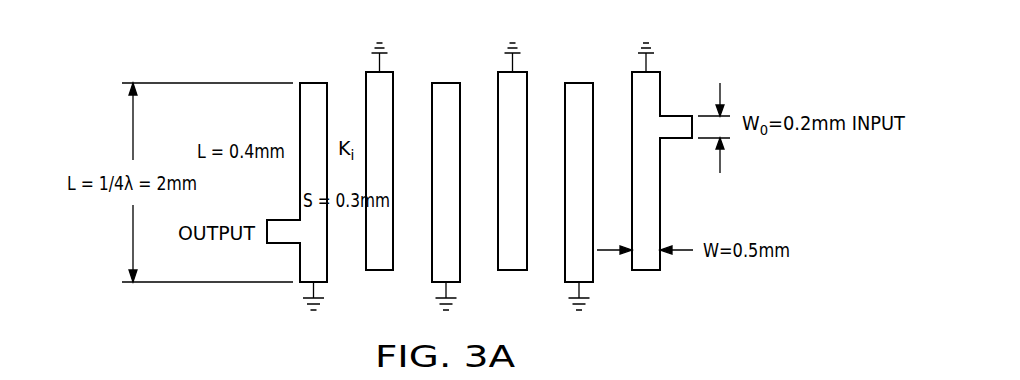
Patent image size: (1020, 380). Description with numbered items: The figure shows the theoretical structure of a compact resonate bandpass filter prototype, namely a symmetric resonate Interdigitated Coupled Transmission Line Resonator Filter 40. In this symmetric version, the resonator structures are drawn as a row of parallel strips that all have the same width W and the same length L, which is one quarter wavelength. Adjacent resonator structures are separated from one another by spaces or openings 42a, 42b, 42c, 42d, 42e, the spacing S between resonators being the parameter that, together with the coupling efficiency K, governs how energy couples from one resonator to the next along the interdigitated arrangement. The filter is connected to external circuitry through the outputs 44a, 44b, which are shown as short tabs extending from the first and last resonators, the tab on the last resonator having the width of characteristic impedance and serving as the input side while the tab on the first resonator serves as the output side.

The symmetric resonate Interdigitated Coupled Transmission Line Resonator Filter 40 is at (692, 83).
The space or opening 42a is at (345, 88).
The space or opening 42b is at (413, 84).
The space or opening 42c is at (478, 84).
The space or opening 42d is at (546, 84).
The space or opening 42e is at (612, 84).
The output 44a is at (293, 245).
The output 44b is at (692, 138).